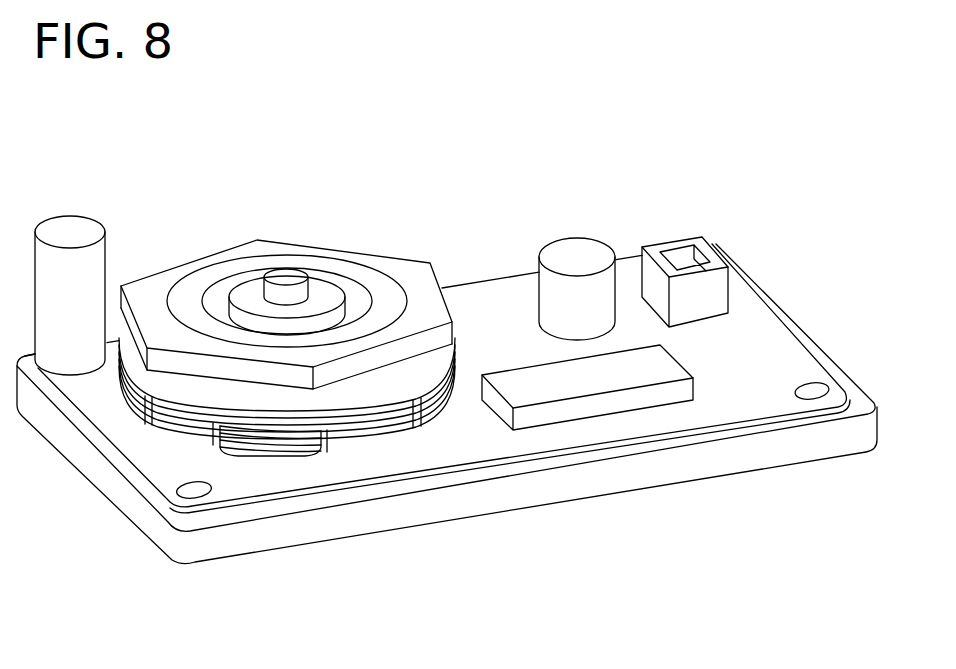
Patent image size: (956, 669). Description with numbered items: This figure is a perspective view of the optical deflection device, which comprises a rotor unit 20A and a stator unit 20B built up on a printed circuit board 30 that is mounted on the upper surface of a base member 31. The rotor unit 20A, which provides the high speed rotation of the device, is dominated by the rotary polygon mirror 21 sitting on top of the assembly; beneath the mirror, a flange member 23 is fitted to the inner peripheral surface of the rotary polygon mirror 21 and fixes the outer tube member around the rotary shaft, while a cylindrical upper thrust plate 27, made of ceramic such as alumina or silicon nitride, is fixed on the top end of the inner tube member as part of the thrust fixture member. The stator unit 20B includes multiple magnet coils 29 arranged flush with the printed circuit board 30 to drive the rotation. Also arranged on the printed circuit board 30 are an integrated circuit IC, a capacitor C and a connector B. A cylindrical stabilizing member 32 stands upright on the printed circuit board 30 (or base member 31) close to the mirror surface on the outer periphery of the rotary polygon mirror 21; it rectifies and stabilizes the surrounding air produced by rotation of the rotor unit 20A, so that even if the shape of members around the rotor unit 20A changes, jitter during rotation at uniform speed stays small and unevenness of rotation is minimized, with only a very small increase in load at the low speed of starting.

The rotor unit 20A is at (286, 273).
The stator unit 20B is at (312, 468).
The rotary polygon mirror 21 is at (160, 277).
The flange member 23 is at (357, 388).
The upper thrust plate 27 is at (252, 280).
The magnet coil 29 is at (282, 456).
The printed circuit board 30 is at (750, 330).
The base member 31 is at (748, 458).
The stabilizing member 32 is at (68, 228).
The connector B is at (675, 238).
The capacitor C is at (565, 242).
The integrated circuit IC is at (573, 392).